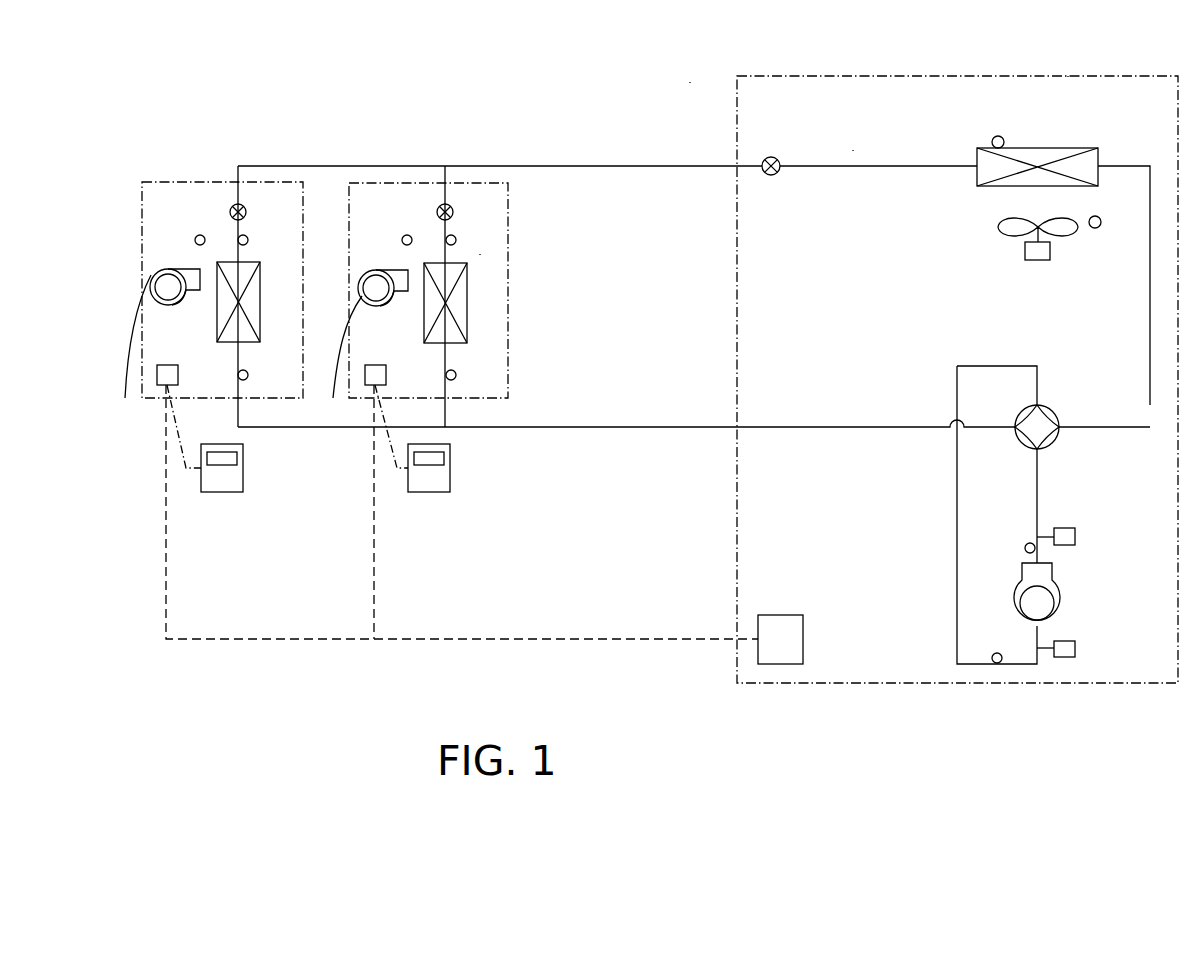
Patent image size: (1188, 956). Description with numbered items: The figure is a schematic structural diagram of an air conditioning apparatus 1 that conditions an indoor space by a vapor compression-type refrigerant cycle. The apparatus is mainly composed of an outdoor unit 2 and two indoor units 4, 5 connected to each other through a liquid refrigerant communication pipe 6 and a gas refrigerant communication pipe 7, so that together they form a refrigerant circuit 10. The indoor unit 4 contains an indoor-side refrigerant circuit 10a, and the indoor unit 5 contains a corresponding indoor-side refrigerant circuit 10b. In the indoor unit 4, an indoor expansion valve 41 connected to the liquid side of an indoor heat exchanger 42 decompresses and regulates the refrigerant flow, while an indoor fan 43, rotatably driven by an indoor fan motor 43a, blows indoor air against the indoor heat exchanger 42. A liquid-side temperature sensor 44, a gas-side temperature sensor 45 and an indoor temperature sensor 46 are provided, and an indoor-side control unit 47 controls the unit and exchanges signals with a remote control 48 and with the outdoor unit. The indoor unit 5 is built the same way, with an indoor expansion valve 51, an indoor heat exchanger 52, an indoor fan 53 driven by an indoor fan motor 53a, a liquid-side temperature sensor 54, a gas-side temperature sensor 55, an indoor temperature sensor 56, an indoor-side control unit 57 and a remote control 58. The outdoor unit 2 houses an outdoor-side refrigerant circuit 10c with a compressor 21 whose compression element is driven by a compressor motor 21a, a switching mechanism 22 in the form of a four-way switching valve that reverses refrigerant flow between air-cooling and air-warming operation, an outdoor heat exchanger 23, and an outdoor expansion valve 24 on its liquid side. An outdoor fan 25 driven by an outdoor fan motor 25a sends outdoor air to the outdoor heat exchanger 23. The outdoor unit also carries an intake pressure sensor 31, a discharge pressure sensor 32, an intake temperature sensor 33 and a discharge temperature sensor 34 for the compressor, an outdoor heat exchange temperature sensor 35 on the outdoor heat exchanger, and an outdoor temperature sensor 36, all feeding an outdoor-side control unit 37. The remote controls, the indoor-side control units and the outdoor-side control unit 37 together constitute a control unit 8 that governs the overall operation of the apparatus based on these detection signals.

The air conditioning apparatus 1 is at (1070, 74).
The outdoor unit 2 is at (957, 76).
The indoor unit 4 is at (165, 182).
The indoor unit 5 is at (508, 203).
The liquid refrigerant communication pipe 6 is at (637, 165).
The gas refrigerant communication pipe 7 is at (655, 427).
The control unit 8 is at (577, 632).
The refrigerant circuit 10 is at (695, 150).
The indoor-side refrigerant circuit 10a is at (226, 195).
The indoor-side refrigerant circuit 10b is at (482, 254).
The outdoor-side refrigerant circuit 10c is at (854, 150).
The compressor 21 is at (1052, 575).
The compressor motor 21a is at (1056, 603).
The switching mechanism 22 is at (1052, 412).
The outdoor heat exchanger 23 is at (1045, 148).
The outdoor expansion valve 24 is at (779, 160).
The outdoor fan 25 is at (998, 228).
The outdoor fan motor 25a is at (1038, 260).
The intake pressure sensor 31 is at (1076, 648).
The discharge pressure sensor 32 is at (1076, 537).
The intake temperature sensor 33 is at (996, 652).
The discharge temperature sensor 34 is at (1025, 548).
The outdoor heat exchange temperature sensor 35 is at (993, 138).
The outdoor temperature sensor 36 is at (1095, 228).
The outdoor-side control unit 37 is at (803, 640).
The indoor expansion valve 41 is at (230, 212).
The indoor heat exchanger 42 is at (217, 318).
The indoor fan 43 is at (156, 274).
The indoor fan motor 43a is at (124, 350).
The liquid-side temperature sensor 44 is at (248, 240).
The gas-side temperature sensor 45 is at (275, 371).
The indoor temperature sensor 46 is at (195, 240).
The indoor-side control unit 47 is at (178, 375).
The remote control 48 is at (222, 492).
The indoor expansion valve 51 is at (437, 212).
The indoor heat exchanger 52 is at (424, 318).
The indoor fan 53 is at (364, 275).
The indoor fan motor 53a is at (333, 361).
The liquid-side temperature sensor 54 is at (456, 240).
The gas-side temperature sensor 55 is at (483, 371).
The indoor temperature sensor 56 is at (402, 240).
The indoor-side control unit 57 is at (386, 375).
The remote control 58 is at (429, 492).